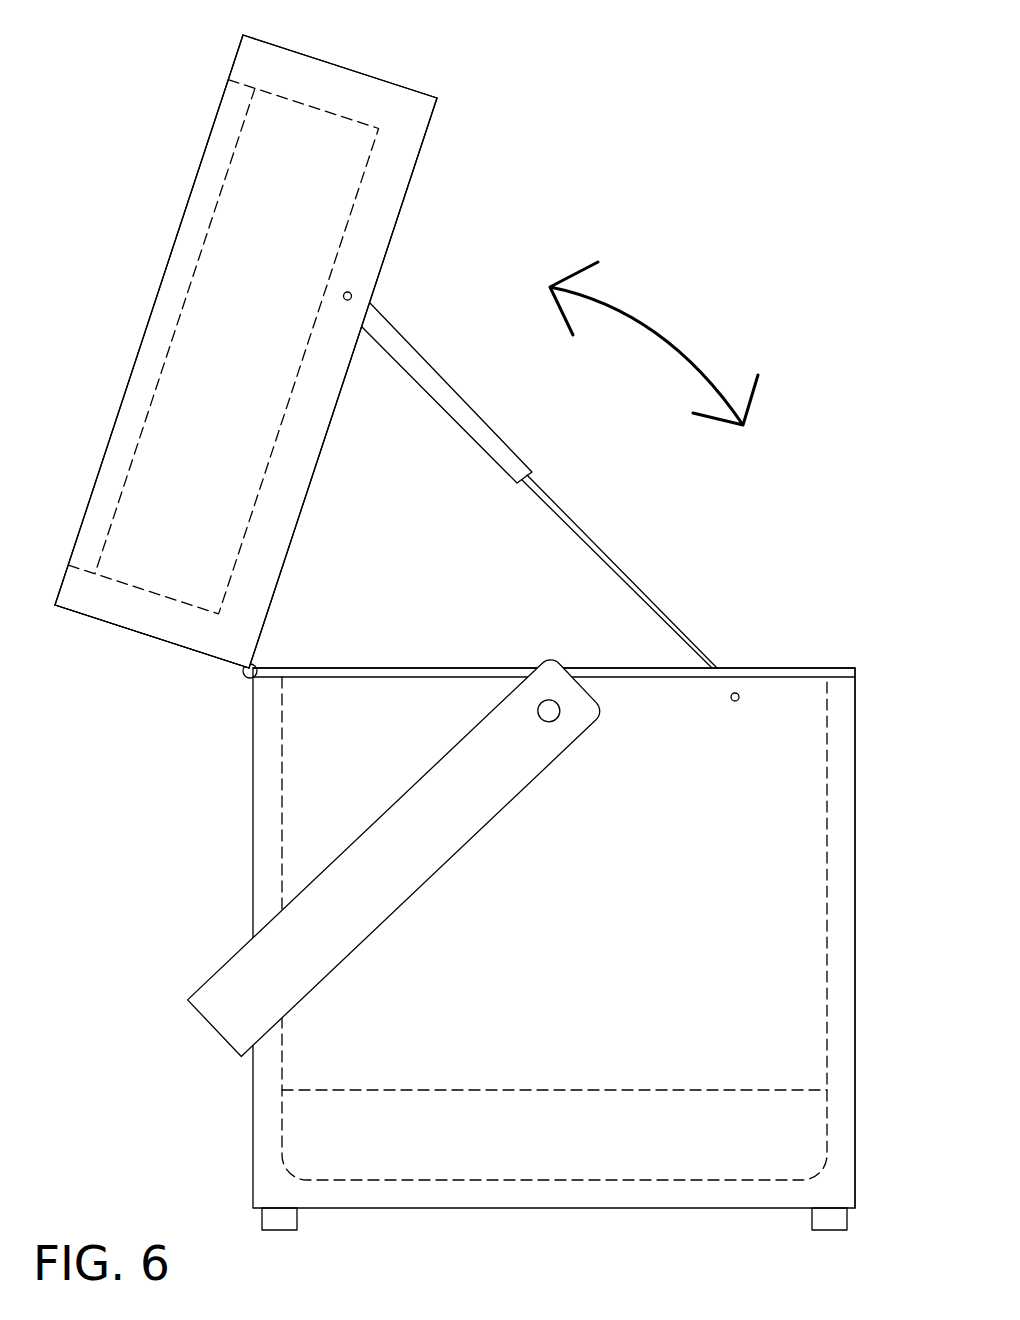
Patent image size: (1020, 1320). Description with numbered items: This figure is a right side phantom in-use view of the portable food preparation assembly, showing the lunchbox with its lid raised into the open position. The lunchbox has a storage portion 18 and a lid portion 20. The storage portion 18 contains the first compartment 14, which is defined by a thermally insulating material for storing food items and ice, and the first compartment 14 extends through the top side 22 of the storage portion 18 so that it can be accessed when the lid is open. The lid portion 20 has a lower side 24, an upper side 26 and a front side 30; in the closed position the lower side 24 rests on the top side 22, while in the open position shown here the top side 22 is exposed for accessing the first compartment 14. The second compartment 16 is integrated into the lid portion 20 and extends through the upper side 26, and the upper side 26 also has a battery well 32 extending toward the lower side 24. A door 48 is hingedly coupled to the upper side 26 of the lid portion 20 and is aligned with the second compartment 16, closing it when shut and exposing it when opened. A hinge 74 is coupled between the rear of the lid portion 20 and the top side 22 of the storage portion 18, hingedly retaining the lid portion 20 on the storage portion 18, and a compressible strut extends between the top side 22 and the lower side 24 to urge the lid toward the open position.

The first compartment 14 is at (777, 716).
The second compartment 16 is at (158, 458).
The storage portion 18 is at (872, 912).
The lid portion 20 is at (97, 637).
The top side 22 is at (737, 668).
The lower side 24 is at (418, 157).
The upper side 26 is at (238, 52).
The front side 30 is at (363, 72).
The battery well 32 is at (175, 647).
The door 48 is at (190, 202).
The hinge 74 is at (242, 677).